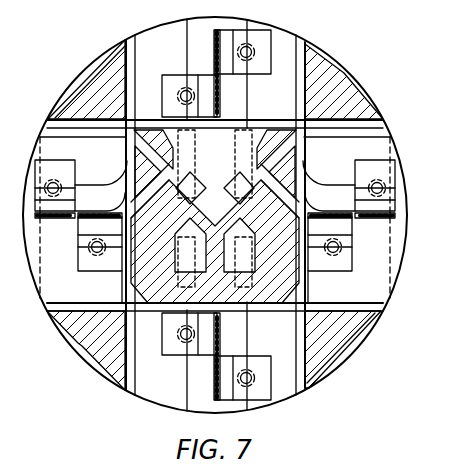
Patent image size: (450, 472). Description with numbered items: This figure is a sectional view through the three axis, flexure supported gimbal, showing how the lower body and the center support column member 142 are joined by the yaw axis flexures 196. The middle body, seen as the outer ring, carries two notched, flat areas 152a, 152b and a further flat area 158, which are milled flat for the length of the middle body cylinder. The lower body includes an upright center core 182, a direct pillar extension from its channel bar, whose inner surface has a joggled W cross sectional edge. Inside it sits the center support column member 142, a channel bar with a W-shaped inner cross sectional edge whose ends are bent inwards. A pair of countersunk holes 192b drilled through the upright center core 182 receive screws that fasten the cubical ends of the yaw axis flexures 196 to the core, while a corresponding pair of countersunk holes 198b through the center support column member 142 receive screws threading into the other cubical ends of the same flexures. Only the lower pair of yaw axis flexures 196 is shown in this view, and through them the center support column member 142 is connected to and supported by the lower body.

The center support column member 142 is at (225, 236).
The notched flat area 152a is at (353, 86).
The notched flat area 152b is at (100, 365).
The flat area 158 is at (337, 362).
The upright center core 182 is at (297, 130).
The countersunk holes 192b is at (243, 130).
The yaw axis flexures 196 is at (171, 177).
The countersunk holes 198b is at (222, 300).